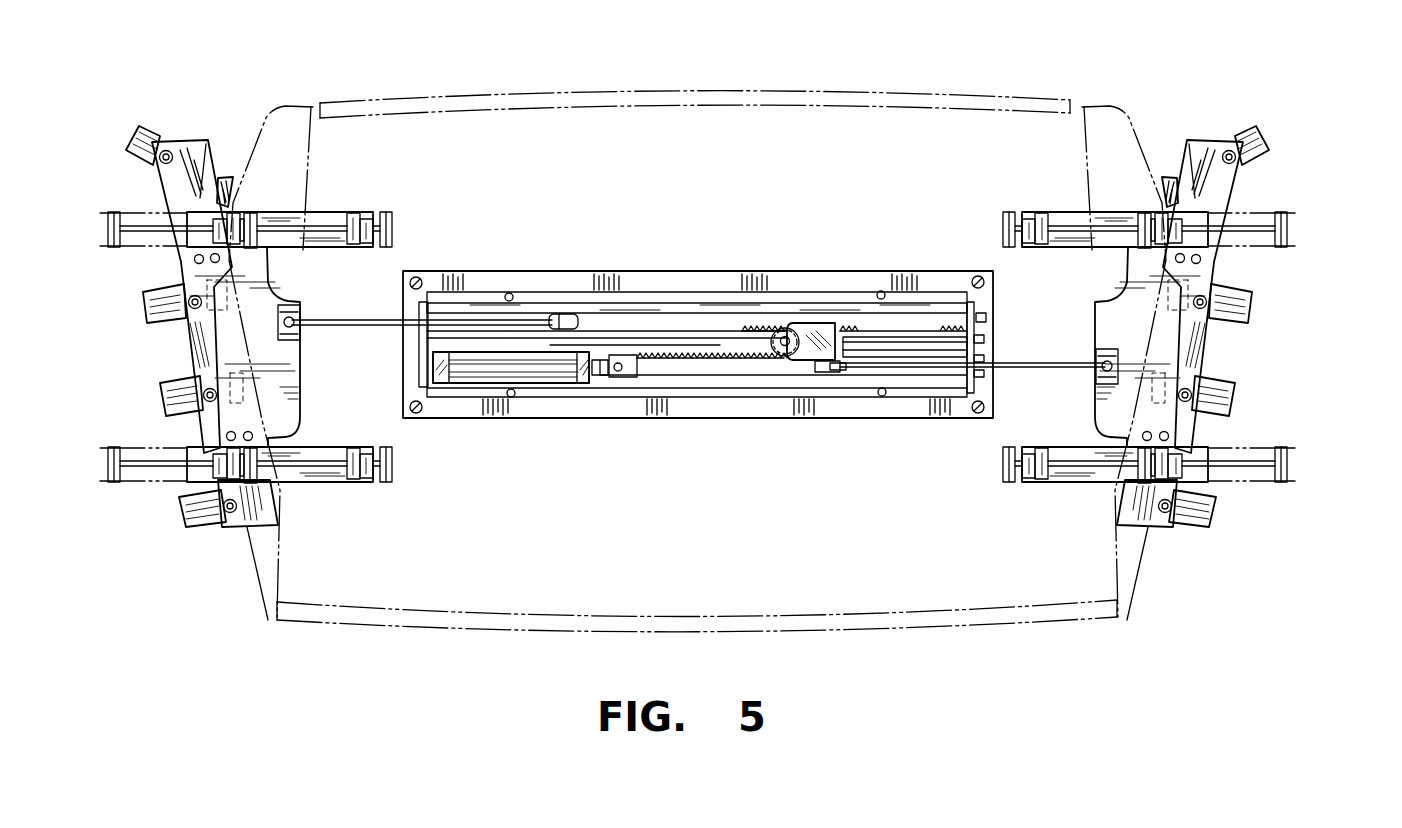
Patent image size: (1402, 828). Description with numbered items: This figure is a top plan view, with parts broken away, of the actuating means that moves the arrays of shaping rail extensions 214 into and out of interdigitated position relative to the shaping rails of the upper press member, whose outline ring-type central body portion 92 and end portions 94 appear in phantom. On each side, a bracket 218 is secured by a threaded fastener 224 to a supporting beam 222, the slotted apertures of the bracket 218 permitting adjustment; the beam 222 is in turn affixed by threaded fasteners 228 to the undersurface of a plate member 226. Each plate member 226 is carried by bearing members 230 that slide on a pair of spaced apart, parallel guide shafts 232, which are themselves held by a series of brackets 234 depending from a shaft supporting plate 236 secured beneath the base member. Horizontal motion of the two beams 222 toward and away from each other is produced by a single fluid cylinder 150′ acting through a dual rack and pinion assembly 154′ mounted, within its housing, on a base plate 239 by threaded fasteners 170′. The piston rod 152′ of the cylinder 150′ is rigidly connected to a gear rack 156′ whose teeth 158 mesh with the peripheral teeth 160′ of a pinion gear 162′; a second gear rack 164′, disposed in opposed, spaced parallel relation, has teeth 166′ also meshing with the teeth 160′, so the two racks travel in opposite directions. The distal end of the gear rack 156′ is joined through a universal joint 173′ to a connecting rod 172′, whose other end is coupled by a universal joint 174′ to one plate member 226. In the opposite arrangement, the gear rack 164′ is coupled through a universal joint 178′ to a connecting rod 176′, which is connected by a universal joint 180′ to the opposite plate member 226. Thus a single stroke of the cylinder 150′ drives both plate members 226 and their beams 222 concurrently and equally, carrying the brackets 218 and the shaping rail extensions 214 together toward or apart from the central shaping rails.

The central body portion 92 is at (810, 86).
The end portions 94 is at (283, 100).
The shaping rail extension 214 is at (221, 178).
The bracket 218 is at (140, 140).
The supporting beam 222 is at (190, 142).
The threaded fastener 224 is at (214, 393).
The plate member 226 is at (300, 390).
The threaded fasteners 228 is at (198, 262).
The bearing members 230 is at (228, 213).
The guide shafts 232 is at (320, 230).
The brackets 234 is at (392, 216).
The shaft supporting plate 236 is at (133, 212).
The base plate 239 is at (706, 416).
The fluid cylinder 150′ is at (465, 377).
The piston rod 152′ is at (603, 380).
The dual rack and pinion assembly 154′ is at (803, 322).
The gear rack 156′ is at (630, 378).
The teeth 158 is at (670, 355).
The peripheral teeth 160′ is at (772, 346).
The pinion gear 162′ is at (777, 355).
The second gear rack 164′ is at (659, 318).
The teeth 166′ is at (757, 330).
The threaded fasteners 170′ is at (509, 293).
The connecting rod 172′ is at (1010, 362).
The universal joint 173′ is at (826, 373).
The universal joint 174′ is at (1098, 363).
The connecting rod 176′ is at (366, 319).
The universal joint 178′ is at (565, 313).
The universal joint 180′ is at (296, 322).